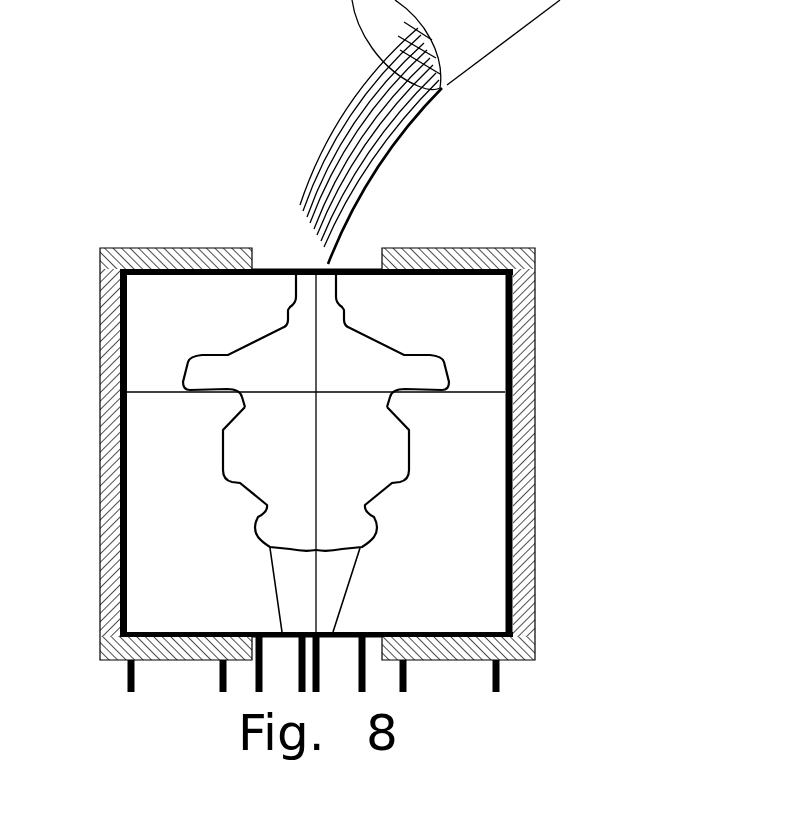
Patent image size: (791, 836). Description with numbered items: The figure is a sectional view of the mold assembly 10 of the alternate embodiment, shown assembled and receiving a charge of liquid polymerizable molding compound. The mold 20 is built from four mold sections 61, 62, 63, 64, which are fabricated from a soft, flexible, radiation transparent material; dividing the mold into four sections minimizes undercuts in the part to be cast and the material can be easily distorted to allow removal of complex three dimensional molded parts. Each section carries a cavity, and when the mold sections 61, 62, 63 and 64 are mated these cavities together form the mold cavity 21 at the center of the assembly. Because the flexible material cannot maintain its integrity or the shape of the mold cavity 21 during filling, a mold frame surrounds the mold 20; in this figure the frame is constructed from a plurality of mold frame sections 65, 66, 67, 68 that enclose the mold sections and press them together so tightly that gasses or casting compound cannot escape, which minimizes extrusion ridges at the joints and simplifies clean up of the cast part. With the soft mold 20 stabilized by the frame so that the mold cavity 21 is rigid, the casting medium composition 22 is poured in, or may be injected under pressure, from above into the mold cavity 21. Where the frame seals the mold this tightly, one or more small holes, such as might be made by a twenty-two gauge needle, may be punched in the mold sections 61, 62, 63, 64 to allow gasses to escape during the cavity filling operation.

The mold assembly 10 is at (537, 262).
The mold 20 is at (220, 568).
The mold cavity 21 is at (315, 457).
The casting medium composition 22 is at (408, 113).
The mold section 61 is at (153, 350).
The mold section 62 is at (463, 325).
The mold section 63 is at (155, 597).
The mold section 64 is at (440, 530).
The mold frame section 65 is at (100, 292).
The mold frame section 66 is at (537, 350).
The mold frame section 67 is at (98, 552).
The mold frame section 68 is at (533, 583).